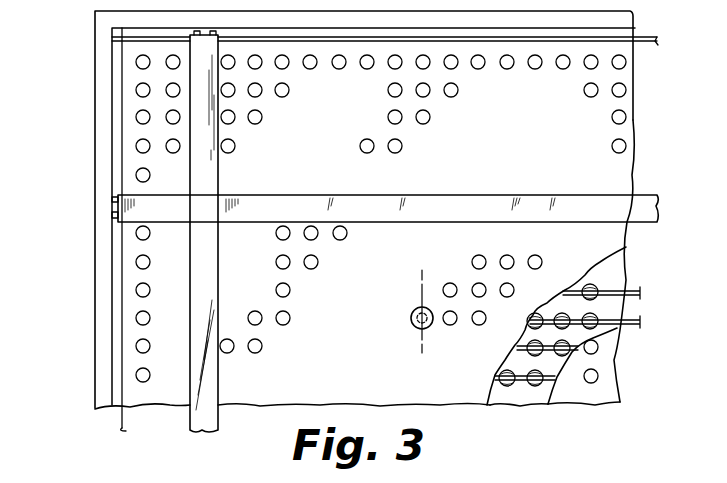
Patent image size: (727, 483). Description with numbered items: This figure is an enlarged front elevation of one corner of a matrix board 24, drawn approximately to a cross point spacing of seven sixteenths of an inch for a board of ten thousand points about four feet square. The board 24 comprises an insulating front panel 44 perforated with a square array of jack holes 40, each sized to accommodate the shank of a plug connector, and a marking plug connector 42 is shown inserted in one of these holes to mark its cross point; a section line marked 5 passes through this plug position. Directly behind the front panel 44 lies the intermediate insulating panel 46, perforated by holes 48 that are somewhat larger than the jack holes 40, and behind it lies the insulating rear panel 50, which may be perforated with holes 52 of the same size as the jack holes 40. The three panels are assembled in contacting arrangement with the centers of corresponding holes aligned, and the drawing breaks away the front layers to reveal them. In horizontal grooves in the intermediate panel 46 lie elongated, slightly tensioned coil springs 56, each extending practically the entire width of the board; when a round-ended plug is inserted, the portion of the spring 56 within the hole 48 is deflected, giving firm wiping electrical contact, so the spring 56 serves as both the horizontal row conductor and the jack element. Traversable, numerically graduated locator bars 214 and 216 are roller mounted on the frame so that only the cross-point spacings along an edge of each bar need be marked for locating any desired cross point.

The matrix board 24 is at (80, 182).
The jack holes 40 is at (340, 68).
The marking plug connector 42 is at (411, 312).
The insulating front panel 44 is at (618, 244).
The intermediate insulating panel 46 is at (617, 278).
The holes 48 is at (513, 382).
The insulating rear panel 50 is at (614, 355).
The holes 52 is at (598, 376).
The coil spring 56 is at (640, 322).
The locator bar 214 is at (222, 384).
The locator bar 216 is at (433, 199).
The section line 5- 5 is at (415, 300).